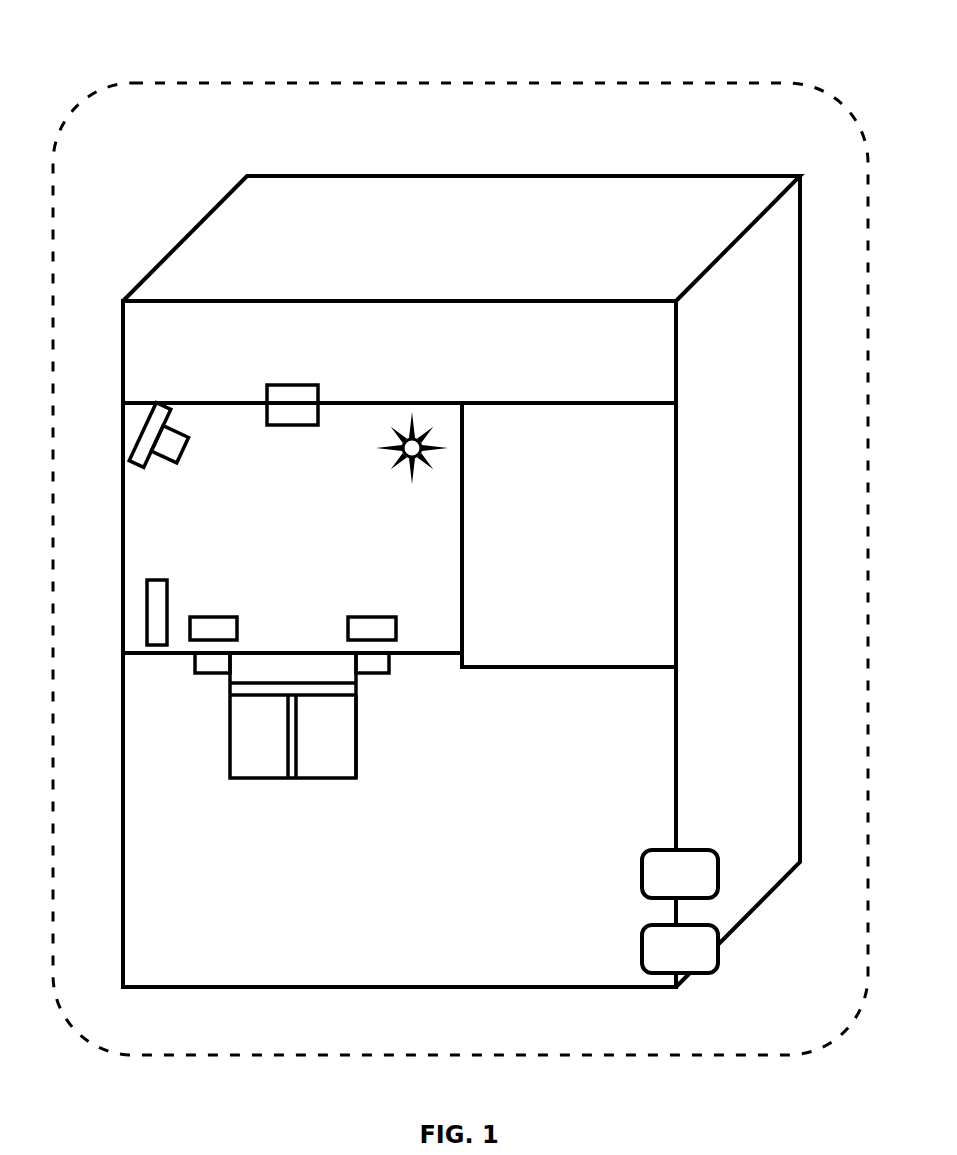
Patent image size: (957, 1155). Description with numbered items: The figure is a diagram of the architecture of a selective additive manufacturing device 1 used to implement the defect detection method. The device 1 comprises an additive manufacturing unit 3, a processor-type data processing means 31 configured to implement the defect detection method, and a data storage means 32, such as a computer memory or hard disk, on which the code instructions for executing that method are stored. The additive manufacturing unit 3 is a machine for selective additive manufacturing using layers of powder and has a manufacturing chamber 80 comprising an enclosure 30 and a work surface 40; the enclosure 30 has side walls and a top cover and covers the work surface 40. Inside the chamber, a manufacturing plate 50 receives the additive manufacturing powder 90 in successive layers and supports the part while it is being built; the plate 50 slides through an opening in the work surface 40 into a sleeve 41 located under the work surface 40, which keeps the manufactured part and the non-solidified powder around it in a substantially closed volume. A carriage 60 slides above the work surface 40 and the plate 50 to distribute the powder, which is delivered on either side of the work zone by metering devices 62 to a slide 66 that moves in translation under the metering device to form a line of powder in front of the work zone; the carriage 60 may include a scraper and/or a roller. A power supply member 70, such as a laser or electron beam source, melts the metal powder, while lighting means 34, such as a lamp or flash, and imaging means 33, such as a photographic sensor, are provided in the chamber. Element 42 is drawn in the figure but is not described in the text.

The selective additive manufacturing device 1 is at (463, 77).
The additive manufacturing unit 3 is at (494, 171).
The enclosure 30 is at (470, 488).
The data processing means 31 is at (723, 947).
The data storage means 32 is at (723, 871).
The imaging means 33 is at (138, 428).
The lighting means 34 is at (453, 448).
The work surface 40 is at (170, 658).
The sleeve 41 is at (361, 716).
The divider 42 is at (303, 735).
The manufacturing plate 50 is at (326, 690).
The carriage 60 is at (144, 612).
The metering devices 62 is at (213, 614).
The slide 66 is at (192, 663).
The power supply member 70 is at (297, 382).
The manufacturing chamber 80 is at (367, 391).
The additive manufacturing powder 90 is at (344, 663).